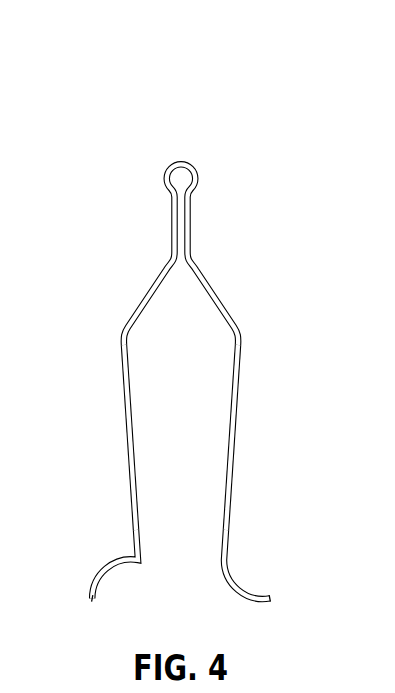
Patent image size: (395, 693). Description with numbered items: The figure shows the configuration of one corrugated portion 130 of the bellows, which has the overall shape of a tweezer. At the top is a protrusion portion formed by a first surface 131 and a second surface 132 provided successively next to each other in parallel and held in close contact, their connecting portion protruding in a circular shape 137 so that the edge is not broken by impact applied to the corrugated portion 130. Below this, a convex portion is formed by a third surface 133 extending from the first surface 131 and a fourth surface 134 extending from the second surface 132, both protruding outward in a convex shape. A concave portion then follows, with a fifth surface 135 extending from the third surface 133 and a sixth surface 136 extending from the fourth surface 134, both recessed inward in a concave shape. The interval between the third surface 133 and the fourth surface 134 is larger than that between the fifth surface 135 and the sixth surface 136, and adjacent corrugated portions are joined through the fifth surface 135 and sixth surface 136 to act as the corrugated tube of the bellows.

The corrugated portion 130 is at (238, 113).
The first surface 131 is at (171, 210).
The second surface 132 is at (191, 210).
The third surface 133 is at (121, 348).
The fourth surface 134 is at (241, 348).
The fifth surface 135 is at (134, 563).
The sixth surface 136 is at (228, 563).
The circular shape 137 is at (170, 164).